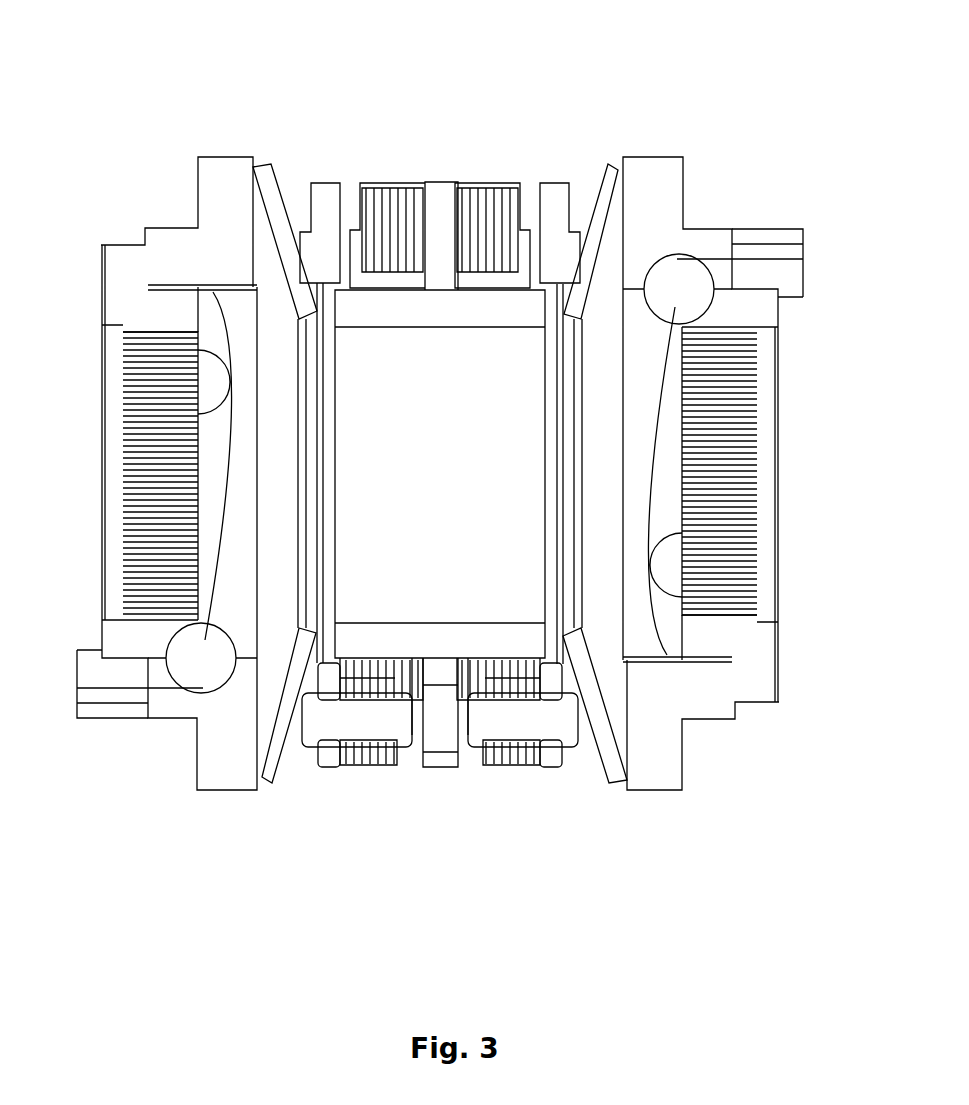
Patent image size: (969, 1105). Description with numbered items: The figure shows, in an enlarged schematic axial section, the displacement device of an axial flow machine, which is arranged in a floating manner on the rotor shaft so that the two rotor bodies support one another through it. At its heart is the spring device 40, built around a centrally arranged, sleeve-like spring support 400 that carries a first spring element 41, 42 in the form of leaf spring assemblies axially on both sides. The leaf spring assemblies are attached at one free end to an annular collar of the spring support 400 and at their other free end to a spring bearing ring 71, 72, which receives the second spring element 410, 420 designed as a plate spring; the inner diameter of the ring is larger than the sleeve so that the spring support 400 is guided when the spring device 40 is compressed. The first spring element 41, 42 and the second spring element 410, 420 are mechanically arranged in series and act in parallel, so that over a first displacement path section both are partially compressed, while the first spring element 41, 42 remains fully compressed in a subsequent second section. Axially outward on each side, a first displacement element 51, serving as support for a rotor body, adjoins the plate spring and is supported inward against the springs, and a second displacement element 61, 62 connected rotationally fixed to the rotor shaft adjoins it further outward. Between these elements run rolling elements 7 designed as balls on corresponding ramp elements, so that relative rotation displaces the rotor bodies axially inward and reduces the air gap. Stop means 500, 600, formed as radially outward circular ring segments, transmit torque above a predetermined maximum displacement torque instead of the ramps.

The spring device 40 is at (489, 117).
The spring support 400 is at (442, 225).
The first spring element 41 is at (372, 748).
The first spring element 42 is at (512, 750).
The second spring element 410 is at (266, 770).
The second spring element 420 is at (608, 745).
The first displacement element 51 is at (222, 172).
The second displacement element 61 is at (147, 312).
The second displacement element 62 is at (733, 307).
The rolling element 7 is at (210, 668).
The spring bearing ring 71 is at (323, 192).
The spring bearing ring 72 is at (548, 195).
The stop means 500 is at (770, 250).
The stop means 600 is at (755, 678).